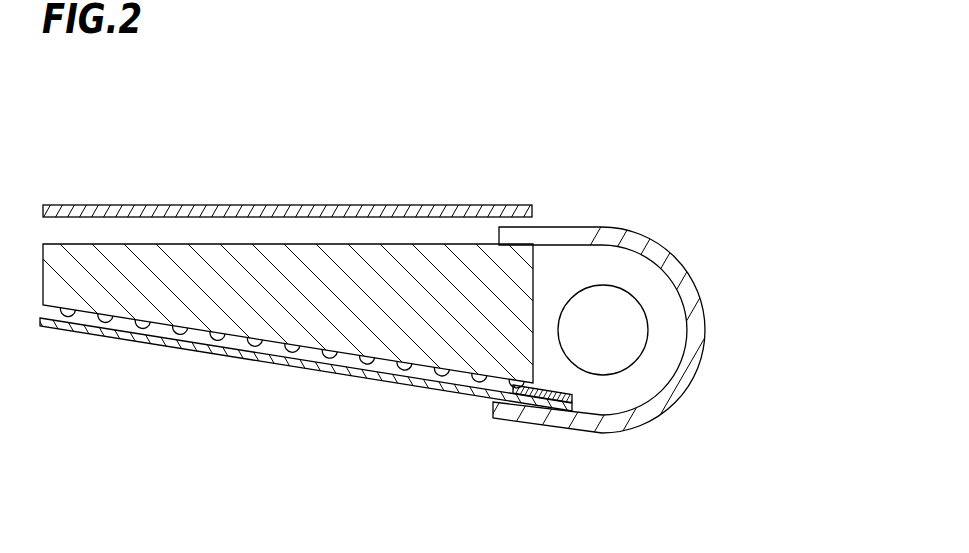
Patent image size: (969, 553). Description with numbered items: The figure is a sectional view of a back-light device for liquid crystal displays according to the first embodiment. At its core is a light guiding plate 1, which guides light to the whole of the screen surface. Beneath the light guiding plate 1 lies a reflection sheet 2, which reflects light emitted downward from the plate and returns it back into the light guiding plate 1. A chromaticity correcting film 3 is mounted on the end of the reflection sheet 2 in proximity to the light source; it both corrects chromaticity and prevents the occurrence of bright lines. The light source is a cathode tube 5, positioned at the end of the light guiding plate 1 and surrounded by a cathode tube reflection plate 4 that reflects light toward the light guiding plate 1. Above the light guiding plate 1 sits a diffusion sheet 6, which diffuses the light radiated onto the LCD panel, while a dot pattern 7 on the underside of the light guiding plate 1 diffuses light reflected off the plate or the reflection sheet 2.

The light guiding plate 1 is at (285, 328).
The reflection sheet 2 is at (465, 392).
The chromaticity correcting film 3 is at (573, 404).
The cathode tube reflection plate 4 is at (570, 228).
The cathode tube 5 is at (625, 320).
The diffusion sheet 6 is at (222, 205).
The dot pattern 7 is at (113, 316).